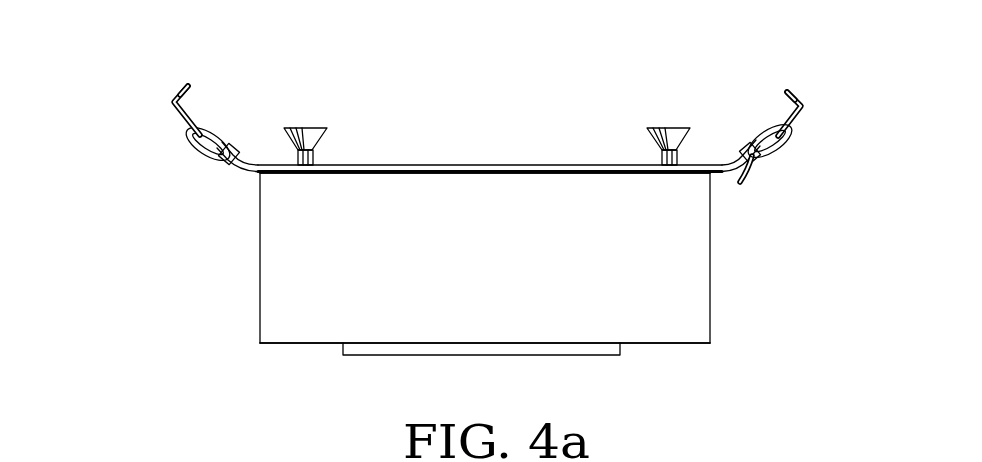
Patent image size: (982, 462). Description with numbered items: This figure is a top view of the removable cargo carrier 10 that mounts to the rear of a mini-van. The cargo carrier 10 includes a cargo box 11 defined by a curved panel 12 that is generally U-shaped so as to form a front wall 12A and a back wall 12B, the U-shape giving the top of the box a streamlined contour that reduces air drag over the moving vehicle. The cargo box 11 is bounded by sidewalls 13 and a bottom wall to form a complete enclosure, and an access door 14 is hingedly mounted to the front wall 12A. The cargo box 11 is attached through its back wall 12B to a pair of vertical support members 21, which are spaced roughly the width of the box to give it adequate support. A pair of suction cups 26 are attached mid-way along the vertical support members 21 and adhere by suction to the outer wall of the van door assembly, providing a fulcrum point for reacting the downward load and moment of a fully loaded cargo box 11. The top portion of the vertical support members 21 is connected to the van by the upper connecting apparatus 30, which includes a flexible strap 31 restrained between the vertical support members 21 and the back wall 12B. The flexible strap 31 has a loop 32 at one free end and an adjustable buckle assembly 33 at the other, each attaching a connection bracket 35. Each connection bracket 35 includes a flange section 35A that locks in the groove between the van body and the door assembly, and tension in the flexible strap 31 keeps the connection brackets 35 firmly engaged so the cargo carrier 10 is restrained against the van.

The removable cargo carrier 10 is at (712, 292).
The cargo box 11 is at (712, 343).
The curved panel 12 is at (503, 268).
The front wall 12A is at (288, 344).
The back wall 12B is at (433, 168).
The sidewalls 13 is at (260, 281).
The access door 14 is at (430, 357).
The vertical support members 21 is at (314, 163).
The suction cups 26 is at (310, 127).
The upper connecting means apparatus 30 is at (775, 152).
The flexible strap 31 is at (565, 165).
The loop 32 is at (212, 132).
The buckle assembly 33 is at (742, 150).
The connection bracket 35 is at (172, 108).
The flange section 35A is at (178, 90).